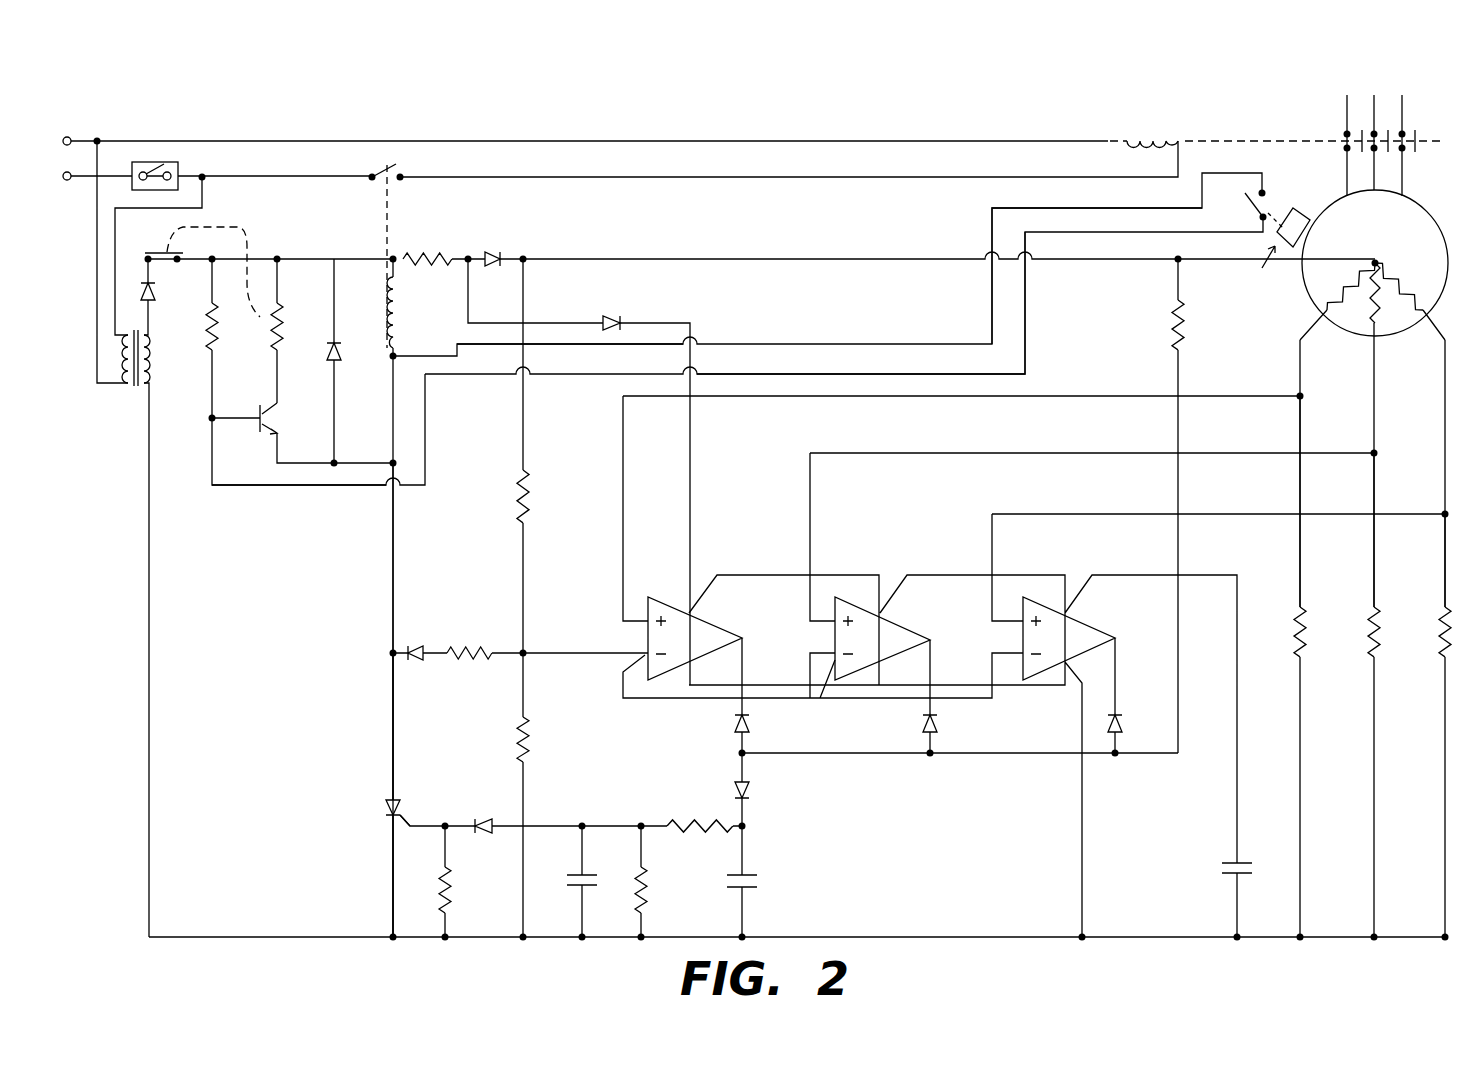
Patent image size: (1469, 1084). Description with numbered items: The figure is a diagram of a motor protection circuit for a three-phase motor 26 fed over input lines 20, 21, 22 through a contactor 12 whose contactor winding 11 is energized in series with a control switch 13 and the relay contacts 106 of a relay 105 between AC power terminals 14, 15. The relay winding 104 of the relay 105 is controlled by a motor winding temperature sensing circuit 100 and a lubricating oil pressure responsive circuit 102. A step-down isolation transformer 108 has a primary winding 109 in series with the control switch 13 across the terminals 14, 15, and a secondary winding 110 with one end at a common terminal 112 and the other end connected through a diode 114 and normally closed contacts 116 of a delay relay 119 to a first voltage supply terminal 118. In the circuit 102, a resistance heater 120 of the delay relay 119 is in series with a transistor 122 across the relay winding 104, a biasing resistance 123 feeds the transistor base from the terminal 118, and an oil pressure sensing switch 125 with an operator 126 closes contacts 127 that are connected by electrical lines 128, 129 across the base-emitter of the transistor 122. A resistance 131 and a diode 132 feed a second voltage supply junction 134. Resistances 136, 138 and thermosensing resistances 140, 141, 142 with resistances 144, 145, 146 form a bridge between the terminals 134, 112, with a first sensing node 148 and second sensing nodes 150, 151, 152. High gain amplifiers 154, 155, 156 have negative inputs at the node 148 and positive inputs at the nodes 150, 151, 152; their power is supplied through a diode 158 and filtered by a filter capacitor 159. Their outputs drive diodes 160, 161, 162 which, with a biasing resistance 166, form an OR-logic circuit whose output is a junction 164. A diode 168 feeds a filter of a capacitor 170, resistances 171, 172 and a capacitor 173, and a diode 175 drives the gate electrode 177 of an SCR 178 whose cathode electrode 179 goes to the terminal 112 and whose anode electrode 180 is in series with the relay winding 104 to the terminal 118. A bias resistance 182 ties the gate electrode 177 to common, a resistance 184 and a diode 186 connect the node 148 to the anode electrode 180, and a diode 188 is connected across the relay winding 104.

The contactor winding 11 is at (1142, 136).
The contactor 12 is at (1271, 128).
The control switch 13 is at (160, 162).
The AC power terminal 14 is at (68, 137).
The AC power terminal 15 is at (80, 158).
The input line 20 is at (1347, 110).
The input line 21 is at (1380, 116).
The input line 22 is at (1404, 120).
The three-phase motor 26 is at (1418, 201).
The motor winding temperature sensing circuit 100 is at (379, 564).
The lubricating oil pressure responsive circuit 102 is at (265, 500).
The relay winding 104 is at (400, 306).
The relay 105 is at (372, 238).
The relay contacts 106 is at (404, 168).
The transformer 108 is at (134, 399).
The primary winding 109 is at (120, 330).
The secondary winding 110 is at (150, 364).
The common terminal 112 is at (275, 932).
The diode 114 is at (157, 290).
The contacts 116 is at (153, 254).
The first voltage supply terminal 118 is at (305, 256).
The delay relay 119 is at (264, 243).
The resistance heater 120 is at (280, 320).
The transistor 122 is at (276, 420).
The biasing resistance 123 is at (220, 330).
The oil pressure sensing switch 125 is at (1266, 271).
The operator 126 is at (1278, 206).
The contacts 127 is at (1258, 207).
The electrical line 128 is at (1027, 328).
The electrical line 129 is at (992, 324).
The resistance 131 is at (410, 256).
The diode 132 is at (494, 255).
The second voltage supply junction 134 is at (714, 258).
The resistance 136 is at (530, 500).
The resistance 138 is at (530, 740).
The thermosensing resistance 140 is at (1338, 313).
The thermosensing resistance 141 is at (1383, 318).
The thermosensing resistance 142 is at (1412, 292).
The resistance 144 is at (1303, 630).
The resistance 145 is at (1378, 632).
The resistance 146 is at (1443, 632).
The first sensing node 148 is at (526, 626).
The second sensing node 150 is at (1300, 440).
The second sensing node 151 is at (1376, 430).
The second sensing node 152 is at (1443, 495).
The high gain amplifier 154 is at (705, 632).
The high gain amplifier 155 is at (905, 632).
The high gain amplifier 156 is at (1087, 632).
The diode 158 is at (612, 320).
The filter capacitor 159 is at (1240, 862).
The diode 160 is at (751, 722).
The diode 161 is at (939, 722).
The diode 162 is at (1124, 722).
The junction 164 is at (852, 755).
The biasing resistance 166 is at (1182, 332).
The diode 168 is at (750, 790).
The capacitor 170 is at (750, 876).
The resistance 171 is at (680, 822).
The resistance 172 is at (671, 890).
The capacitor 173 is at (586, 874).
The diode 175 is at (487, 820).
The gate electrode 177 is at (410, 823).
The SCR 178 is at (400, 808).
The cathode electrode 179 is at (392, 880).
The anode electrode 180 is at (392, 766).
The bias resistance 182 is at (453, 880).
The resistance 184 is at (468, 650).
The diode 186 is at (413, 650).
The diode 188 is at (342, 352).